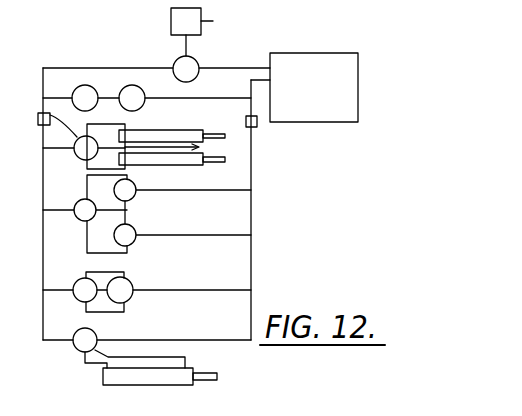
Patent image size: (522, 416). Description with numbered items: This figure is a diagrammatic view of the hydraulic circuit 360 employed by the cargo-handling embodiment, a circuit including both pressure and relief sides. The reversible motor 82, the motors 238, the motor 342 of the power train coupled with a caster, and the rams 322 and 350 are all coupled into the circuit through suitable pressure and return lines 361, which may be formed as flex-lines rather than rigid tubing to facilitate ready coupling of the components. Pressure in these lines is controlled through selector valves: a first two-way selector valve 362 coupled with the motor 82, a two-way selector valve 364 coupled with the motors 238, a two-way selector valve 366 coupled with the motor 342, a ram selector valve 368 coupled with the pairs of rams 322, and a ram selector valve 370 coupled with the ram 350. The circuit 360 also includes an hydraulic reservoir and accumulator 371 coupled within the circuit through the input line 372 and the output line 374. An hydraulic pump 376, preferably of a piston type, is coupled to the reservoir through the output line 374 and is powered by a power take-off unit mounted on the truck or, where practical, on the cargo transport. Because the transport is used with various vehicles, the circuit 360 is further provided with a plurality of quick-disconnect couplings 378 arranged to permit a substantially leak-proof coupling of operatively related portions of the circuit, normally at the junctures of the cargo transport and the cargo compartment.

The hydraulic circuit 360 is at (258, 258).
The pressure and return lines 361 is at (60, 208).
The first two-way selector valve 362 is at (76, 90).
The two-way selector valve 364 is at (77, 223).
The two-way selector valve 366 is at (78, 297).
The ram selector valve 368 is at (26, 204).
The ram selector valve 370 is at (77, 350).
The hydraulic reservoir and accumulator 371 is at (330, 125).
The input line 372 is at (253, 88).
The output line 374 is at (228, 67).
The hydraulic pump 376 is at (173, 63).
The quick-disconnect couplings 378 is at (38, 122).
The reversible motor 82 is at (143, 106).
The rams 322 is at (238, 123).
The motors 238 is at (136, 198).
The motor 342 is at (131, 299).
The ram 350 is at (133, 377).